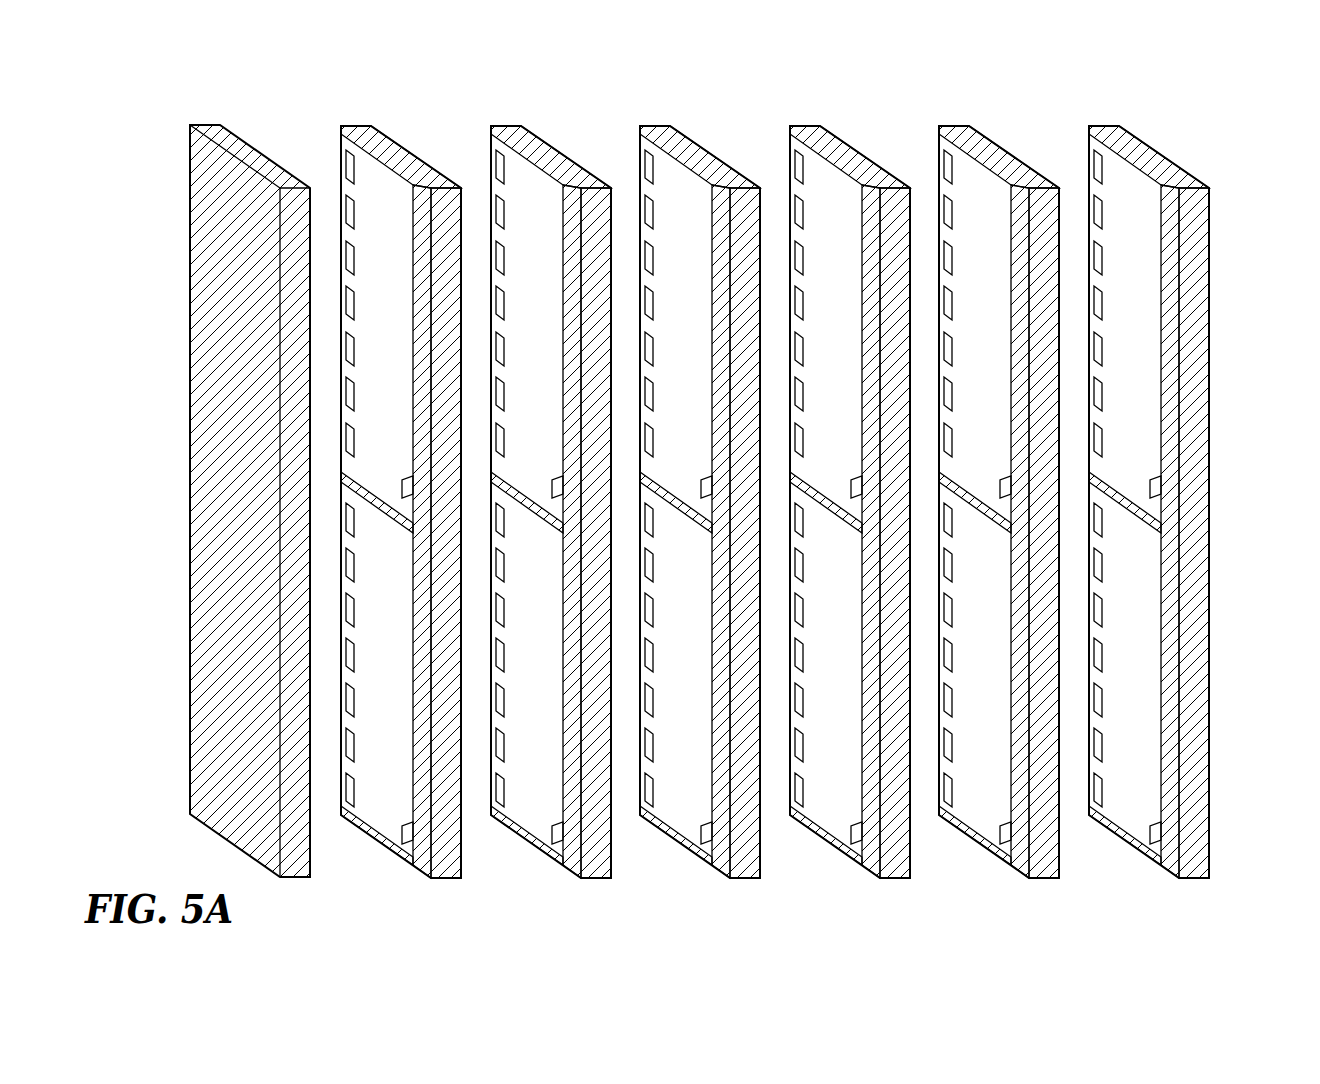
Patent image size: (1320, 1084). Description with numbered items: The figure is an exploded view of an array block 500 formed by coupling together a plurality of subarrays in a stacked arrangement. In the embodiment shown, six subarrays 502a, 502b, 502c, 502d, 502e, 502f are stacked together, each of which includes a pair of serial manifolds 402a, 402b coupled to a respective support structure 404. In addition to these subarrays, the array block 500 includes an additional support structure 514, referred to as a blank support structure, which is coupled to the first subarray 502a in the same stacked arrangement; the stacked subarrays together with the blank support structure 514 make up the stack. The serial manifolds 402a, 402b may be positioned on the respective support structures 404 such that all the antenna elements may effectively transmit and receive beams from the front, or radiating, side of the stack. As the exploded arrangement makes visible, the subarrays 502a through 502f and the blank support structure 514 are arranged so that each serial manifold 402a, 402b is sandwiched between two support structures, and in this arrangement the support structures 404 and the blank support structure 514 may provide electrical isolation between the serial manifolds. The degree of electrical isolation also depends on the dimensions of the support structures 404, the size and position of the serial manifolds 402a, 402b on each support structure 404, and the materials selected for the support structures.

The array block 500 is at (1222, 141).
The additional support structure 514 is at (190, 153).
The first subarray 502a is at (344, 482).
The subarray 502b is at (494, 482).
The subarray 502c is at (643, 482).
The subarray 502d is at (793, 482).
The subarray 502e is at (942, 482).
The subarray 502f is at (1092, 482).
The serial manifold 402a is at (750, 655).
The serial manifold 402b is at (751, 303).
The support structure 404 is at (764, 863).